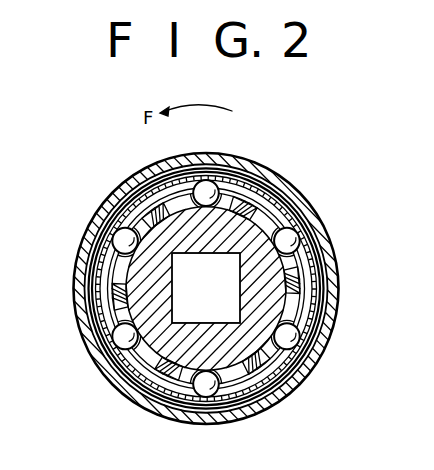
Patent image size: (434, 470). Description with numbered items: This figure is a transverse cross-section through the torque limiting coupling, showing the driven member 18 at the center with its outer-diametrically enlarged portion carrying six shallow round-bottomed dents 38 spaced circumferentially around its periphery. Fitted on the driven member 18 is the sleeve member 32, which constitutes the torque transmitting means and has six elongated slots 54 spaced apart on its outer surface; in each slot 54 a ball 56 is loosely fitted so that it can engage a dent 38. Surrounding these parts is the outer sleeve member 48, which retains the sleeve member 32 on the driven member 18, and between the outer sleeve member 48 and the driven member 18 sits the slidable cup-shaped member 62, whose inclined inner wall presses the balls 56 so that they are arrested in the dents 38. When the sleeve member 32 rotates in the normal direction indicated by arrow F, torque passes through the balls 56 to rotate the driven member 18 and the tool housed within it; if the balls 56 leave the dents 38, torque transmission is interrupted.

The driven member 18 is at (275, 192).
The sleeve member 32 is at (300, 263).
The dents 38 is at (222, 180).
The outer sleeve member 48 is at (327, 320).
The elongated slots 54 is at (168, 196).
The balls 56 is at (207, 181).
The cup-shaped member 62 is at (295, 212).